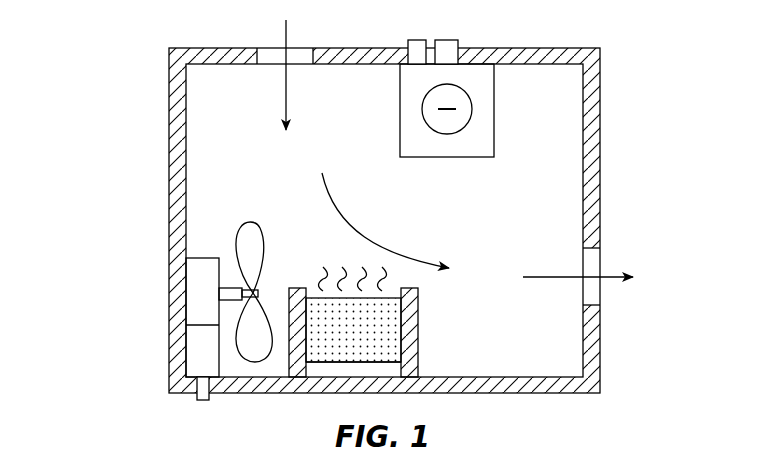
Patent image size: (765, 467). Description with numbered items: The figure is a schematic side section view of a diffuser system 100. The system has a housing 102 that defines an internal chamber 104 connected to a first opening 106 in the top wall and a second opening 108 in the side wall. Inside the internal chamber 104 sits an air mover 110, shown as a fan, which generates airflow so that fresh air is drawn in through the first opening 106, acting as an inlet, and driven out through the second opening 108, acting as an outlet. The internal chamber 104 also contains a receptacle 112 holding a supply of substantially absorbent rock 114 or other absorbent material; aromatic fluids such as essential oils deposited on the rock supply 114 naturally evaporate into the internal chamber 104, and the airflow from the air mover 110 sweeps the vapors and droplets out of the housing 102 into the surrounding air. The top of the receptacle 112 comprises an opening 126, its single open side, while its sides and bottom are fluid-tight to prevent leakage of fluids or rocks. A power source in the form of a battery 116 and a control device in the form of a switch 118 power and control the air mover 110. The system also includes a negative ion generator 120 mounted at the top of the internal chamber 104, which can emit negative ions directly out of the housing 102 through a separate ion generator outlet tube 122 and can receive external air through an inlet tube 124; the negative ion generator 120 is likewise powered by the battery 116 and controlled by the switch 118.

The diffuser system 100 is at (363, 227).
The housing 102 is at (600, 137).
The internal chamber 104 is at (548, 346).
The first opening 106 is at (257, 50).
The second opening 108 is at (590, 298).
The air mover 110 is at (248, 237).
The receptacle 112 is at (418, 330).
The absorbent rock supply 114 is at (368, 343).
The battery 116 is at (198, 353).
The switch 118 is at (203, 402).
The negative ion generator 120 is at (478, 75).
The ion generator outlet tube 122 is at (447, 39).
The inlet tube 124 is at (408, 41).
The opening 126 is at (311, 289).